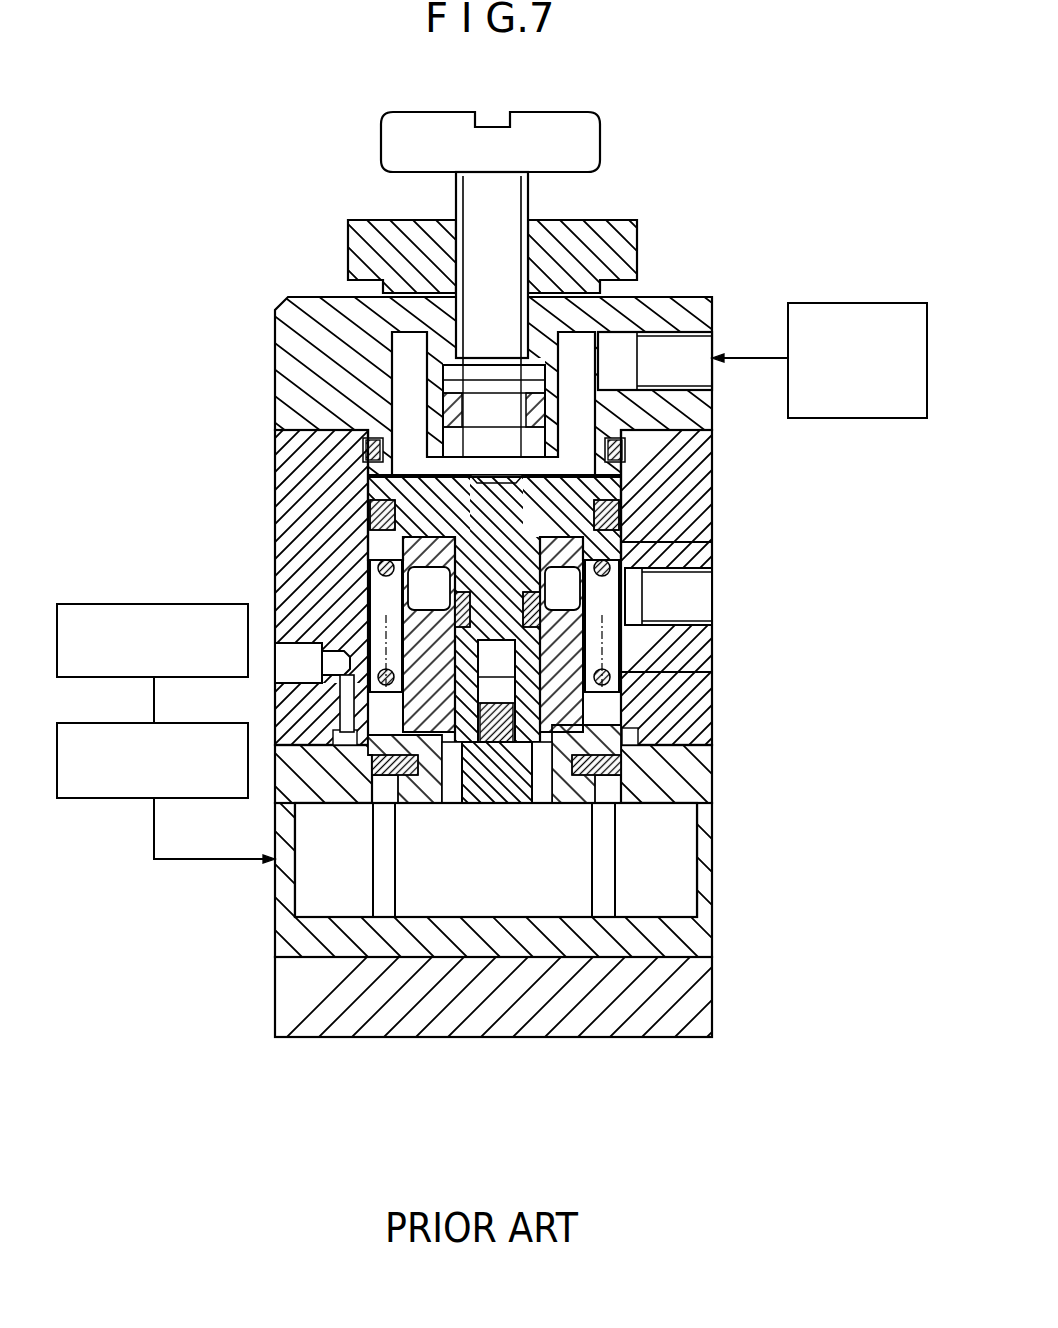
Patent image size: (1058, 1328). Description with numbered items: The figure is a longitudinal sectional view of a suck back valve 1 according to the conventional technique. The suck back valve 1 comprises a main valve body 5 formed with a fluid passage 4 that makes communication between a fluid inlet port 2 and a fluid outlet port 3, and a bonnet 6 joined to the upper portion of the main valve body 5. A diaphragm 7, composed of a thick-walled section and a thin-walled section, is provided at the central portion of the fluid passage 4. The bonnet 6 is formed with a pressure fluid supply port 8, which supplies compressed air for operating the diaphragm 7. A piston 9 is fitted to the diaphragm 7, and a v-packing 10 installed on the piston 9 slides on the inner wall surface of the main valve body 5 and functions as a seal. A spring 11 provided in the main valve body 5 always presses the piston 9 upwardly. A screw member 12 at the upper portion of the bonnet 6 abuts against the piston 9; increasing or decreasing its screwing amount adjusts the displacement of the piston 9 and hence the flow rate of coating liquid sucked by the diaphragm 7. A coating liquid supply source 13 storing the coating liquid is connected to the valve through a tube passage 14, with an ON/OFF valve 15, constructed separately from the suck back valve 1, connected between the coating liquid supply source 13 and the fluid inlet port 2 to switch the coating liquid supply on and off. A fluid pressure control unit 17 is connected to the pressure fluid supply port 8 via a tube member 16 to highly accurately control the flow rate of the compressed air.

The suck back valve 1 is at (724, 188).
The fluid inlet port 2 is at (300, 893).
The fluid outlet port 3 is at (665, 870).
The fluid passage 4 is at (428, 920).
The main valve body 5 is at (728, 713).
The bonnet 6 is at (710, 297).
The diaphragm 7 is at (526, 806).
The pressure fluid supply port 8 is at (692, 383).
The piston 9 is at (512, 566).
The v-packing 10 is at (378, 522).
The spring 11 is at (608, 677).
The screw member 12 is at (506, 197).
The coating liquid supply source 13 is at (192, 604).
The tube passage 14 is at (152, 700).
The ON/OFF valve 15 is at (195, 723).
The tube member 16 is at (745, 357).
The fluid pressure control unit 17 is at (896, 303).